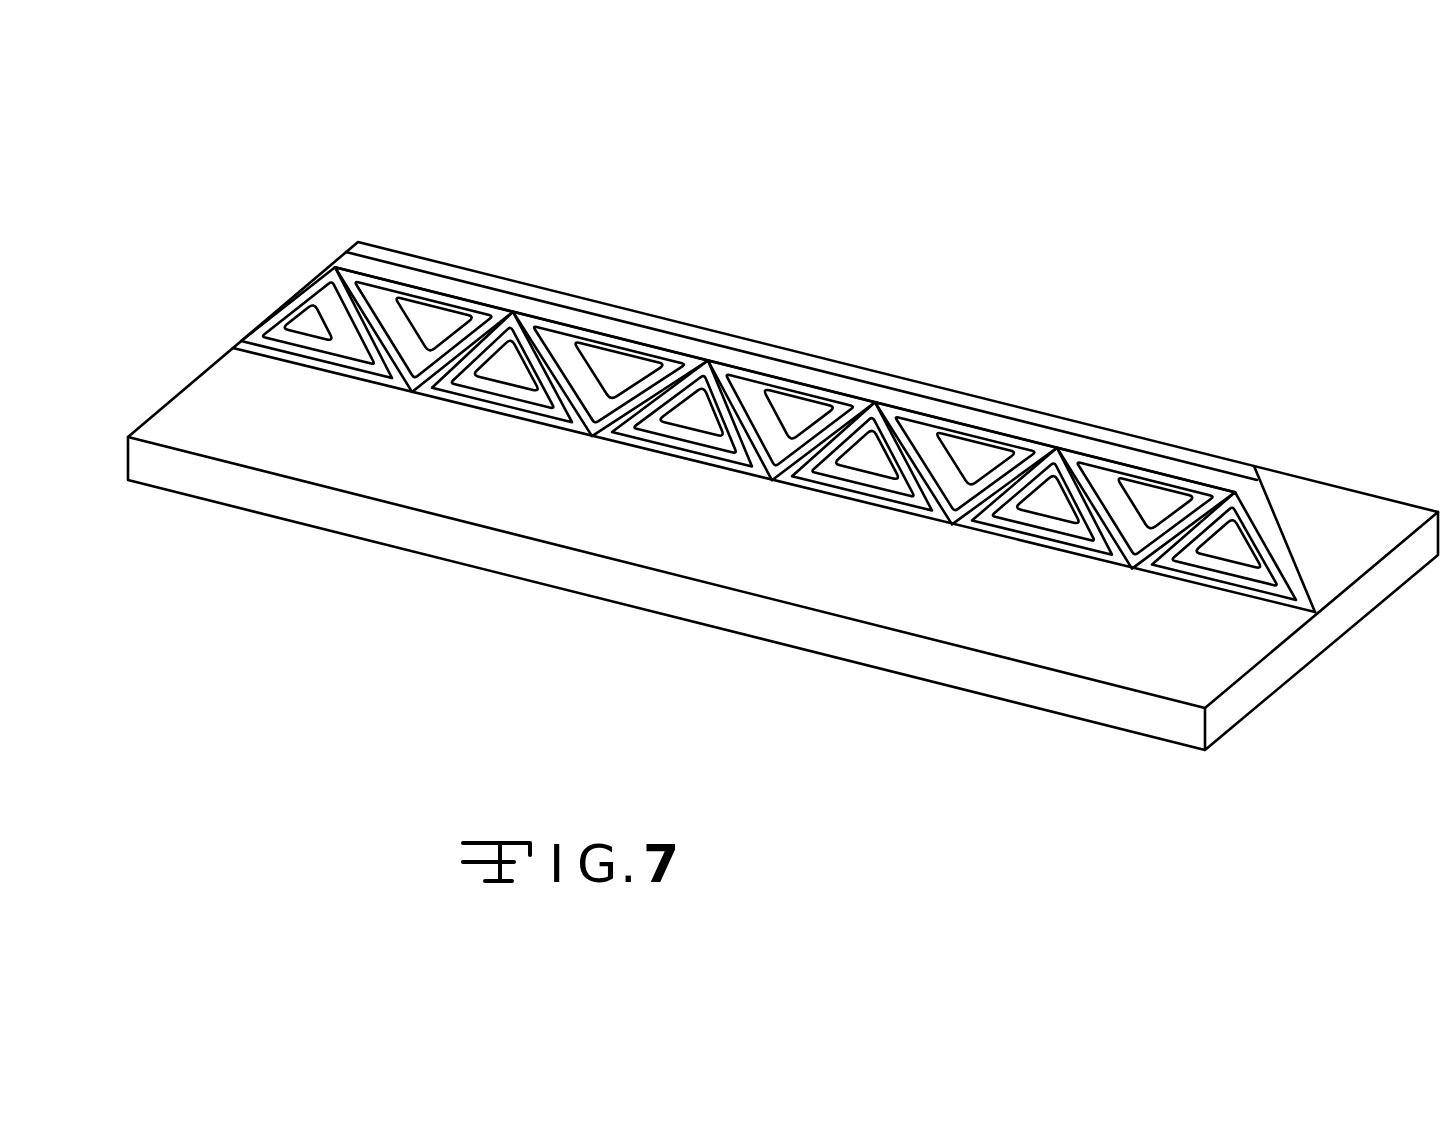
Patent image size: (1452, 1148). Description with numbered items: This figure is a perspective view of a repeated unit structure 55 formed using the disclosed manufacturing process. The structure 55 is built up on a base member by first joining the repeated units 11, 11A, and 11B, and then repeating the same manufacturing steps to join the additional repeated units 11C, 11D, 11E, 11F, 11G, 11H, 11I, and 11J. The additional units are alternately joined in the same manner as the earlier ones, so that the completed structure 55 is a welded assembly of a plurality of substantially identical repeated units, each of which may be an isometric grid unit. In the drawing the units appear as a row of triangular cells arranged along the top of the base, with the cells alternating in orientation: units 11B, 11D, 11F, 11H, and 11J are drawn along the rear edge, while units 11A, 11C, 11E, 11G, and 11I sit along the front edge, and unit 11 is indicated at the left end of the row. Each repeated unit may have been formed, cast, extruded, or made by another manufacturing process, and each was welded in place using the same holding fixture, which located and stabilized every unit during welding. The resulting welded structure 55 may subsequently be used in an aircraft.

The repeated unit 11 is at (284, 300).
The repeated unit 11A is at (500, 390).
The repeated unit 11B is at (430, 282).
The repeated unit 11C is at (680, 450).
The repeated unit 11D is at (615, 327).
The repeated unit 11E is at (885, 505).
The repeated unit 11F is at (785, 362).
The repeated unit 11G is at (1040, 537).
The repeated unit 11H is at (975, 415).
The repeated unit 11I is at (1225, 565).
The repeated unit 11J is at (1160, 457).
The structure 55 is at (966, 264).